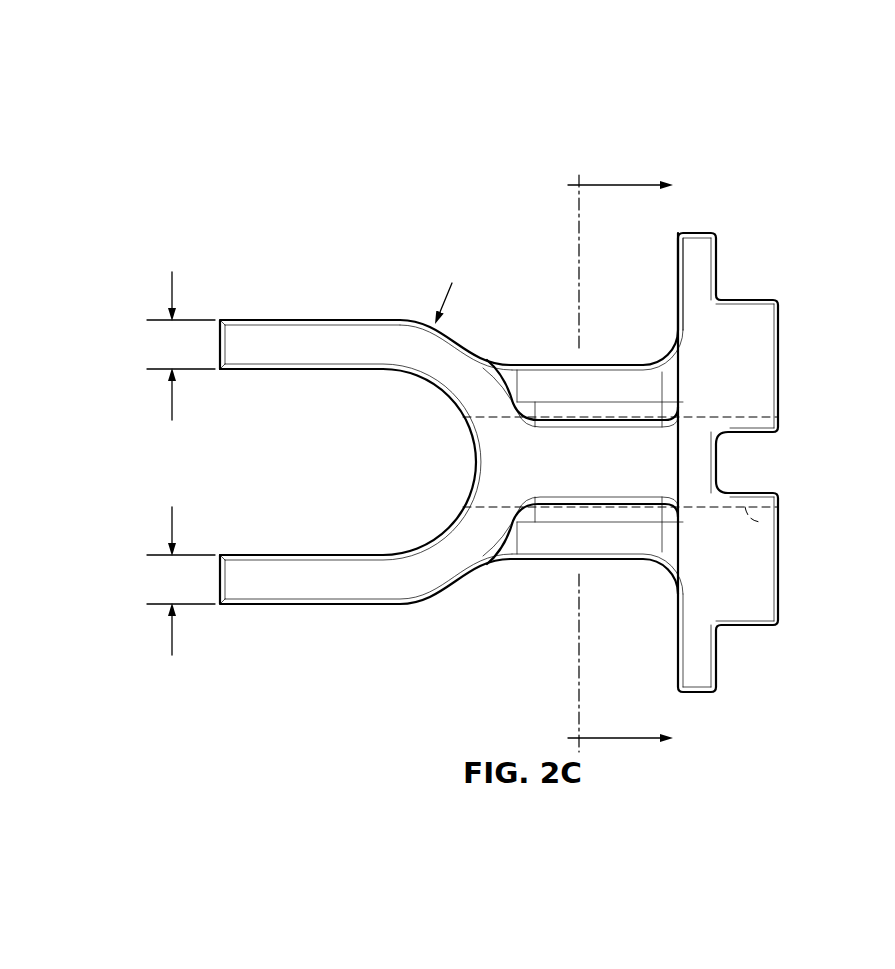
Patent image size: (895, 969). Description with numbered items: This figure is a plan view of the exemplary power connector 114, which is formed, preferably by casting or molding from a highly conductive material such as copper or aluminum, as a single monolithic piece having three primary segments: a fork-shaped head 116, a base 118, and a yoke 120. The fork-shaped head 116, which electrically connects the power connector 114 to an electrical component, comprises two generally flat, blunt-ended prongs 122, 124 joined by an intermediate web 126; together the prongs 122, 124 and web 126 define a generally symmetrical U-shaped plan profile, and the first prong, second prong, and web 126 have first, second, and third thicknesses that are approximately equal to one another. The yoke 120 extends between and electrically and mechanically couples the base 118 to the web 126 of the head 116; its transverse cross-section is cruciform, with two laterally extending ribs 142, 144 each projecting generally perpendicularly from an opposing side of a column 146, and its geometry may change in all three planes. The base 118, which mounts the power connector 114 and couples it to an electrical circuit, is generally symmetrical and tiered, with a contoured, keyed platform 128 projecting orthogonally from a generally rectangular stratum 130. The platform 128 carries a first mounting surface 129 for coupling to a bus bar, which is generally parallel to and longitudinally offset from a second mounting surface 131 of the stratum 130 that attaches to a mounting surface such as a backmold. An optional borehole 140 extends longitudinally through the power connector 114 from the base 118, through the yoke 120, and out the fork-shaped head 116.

The power connector 114 is at (287, 165).
The fork-shaped head 116 is at (335, 618).
The base 118 is at (716, 702).
The yoke 120 is at (550, 570).
The first prong 122 is at (305, 320).
The second prong 124 is at (305, 555).
The web 126 is at (465, 336).
The platform 128 is at (773, 300).
The first mounting surface 129 is at (783, 352).
The stratum 130 is at (703, 232).
The second mounting surface 131 is at (718, 250).
The borehole 140 is at (762, 522).
The rib 142 is at (616, 562).
The rib 144 is at (628, 382).
The column 146 is at (559, 440).